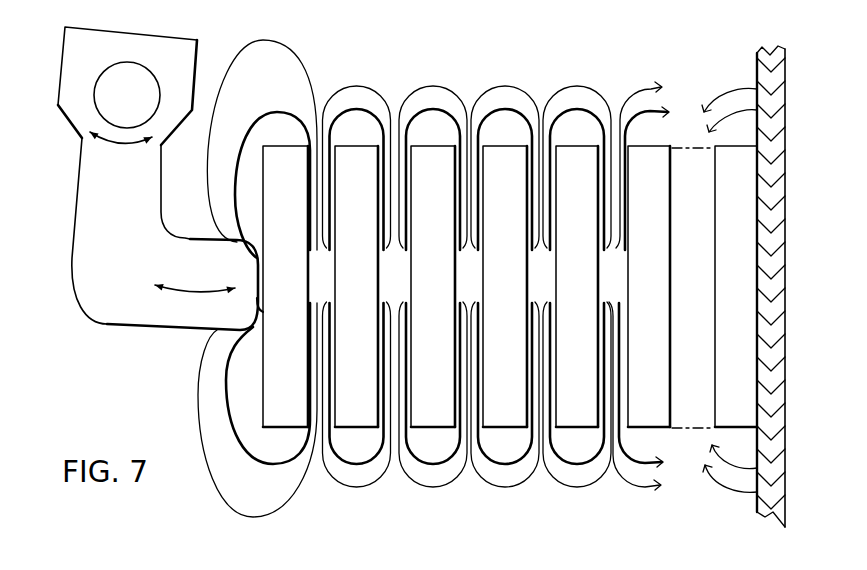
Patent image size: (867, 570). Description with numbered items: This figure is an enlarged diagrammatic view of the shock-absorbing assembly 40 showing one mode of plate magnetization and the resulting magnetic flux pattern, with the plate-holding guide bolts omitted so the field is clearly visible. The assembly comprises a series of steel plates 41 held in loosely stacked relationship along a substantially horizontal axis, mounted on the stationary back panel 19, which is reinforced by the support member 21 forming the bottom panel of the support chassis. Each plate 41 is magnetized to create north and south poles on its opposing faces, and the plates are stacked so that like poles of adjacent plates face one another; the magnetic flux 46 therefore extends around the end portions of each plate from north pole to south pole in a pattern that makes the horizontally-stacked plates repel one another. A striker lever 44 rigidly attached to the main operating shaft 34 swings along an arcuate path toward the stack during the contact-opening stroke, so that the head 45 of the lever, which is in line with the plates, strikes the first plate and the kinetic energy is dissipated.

The back panel 19 is at (748, 263).
The support member 21 is at (767, 70).
The main operating shaft 34 is at (128, 82).
The shock-absorbing assembly 40 is at (410, 25).
The steel plates 41 is at (627, 432).
The striker lever 44 is at (83, 252).
The head 45 is at (237, 307).
The magnetic flux 46 is at (567, 87).